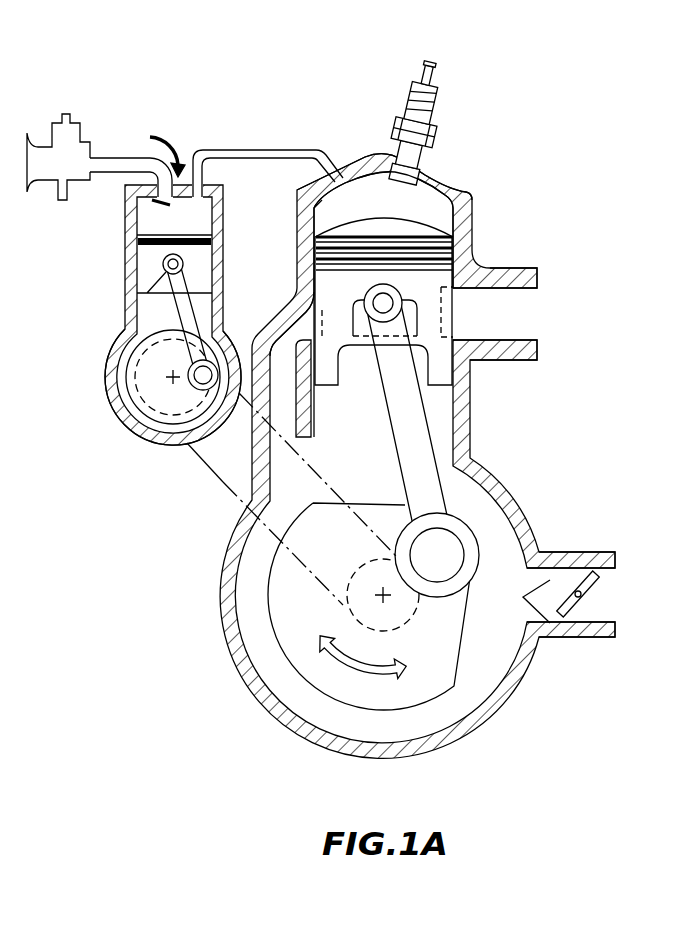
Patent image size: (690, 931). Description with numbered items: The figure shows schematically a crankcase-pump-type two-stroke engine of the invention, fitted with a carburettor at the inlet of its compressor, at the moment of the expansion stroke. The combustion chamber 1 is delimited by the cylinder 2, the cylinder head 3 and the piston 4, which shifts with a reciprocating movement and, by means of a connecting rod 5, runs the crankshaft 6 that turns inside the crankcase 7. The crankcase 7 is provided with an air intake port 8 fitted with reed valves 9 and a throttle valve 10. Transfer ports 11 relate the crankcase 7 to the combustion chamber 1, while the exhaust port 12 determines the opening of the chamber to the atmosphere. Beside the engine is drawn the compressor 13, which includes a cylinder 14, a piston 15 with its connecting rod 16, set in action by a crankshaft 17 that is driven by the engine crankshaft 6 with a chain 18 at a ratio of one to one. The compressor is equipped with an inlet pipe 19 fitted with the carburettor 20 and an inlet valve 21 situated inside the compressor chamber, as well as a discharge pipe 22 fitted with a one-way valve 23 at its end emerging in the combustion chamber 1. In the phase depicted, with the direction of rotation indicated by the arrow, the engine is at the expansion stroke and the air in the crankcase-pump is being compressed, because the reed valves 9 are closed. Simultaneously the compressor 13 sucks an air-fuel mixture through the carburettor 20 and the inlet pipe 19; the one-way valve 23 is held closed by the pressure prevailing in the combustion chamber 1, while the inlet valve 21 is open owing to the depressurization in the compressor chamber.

The combustion chamber 1 is at (372, 200).
The cylinder 2 is at (467, 233).
The cylinder head 3 is at (448, 182).
The piston 4 is at (423, 297).
The connecting rod 5 is at (413, 451).
The crankshaft 6 is at (418, 682).
The crankcase 7 is at (258, 698).
The air intake port 8 is at (627, 597).
The reed valves 9 is at (541, 598).
The throttle valve 10 is at (579, 578).
The transfer ports 11 is at (284, 328).
The exhaust port 12 is at (523, 315).
The compressor 13 is at (103, 378).
The cylinder 14 is at (125, 292).
The piston 15 is at (156, 263).
The connecting rod 16 is at (186, 322).
The crankshaft 17 is at (137, 418).
The chain 18 is at (223, 482).
The inlet pipe 19 is at (123, 157).
The carburettor 20 is at (62, 105).
The inlet valve 21 is at (155, 205).
The discharge pipe 22 is at (258, 150).
The one-way valve 23 is at (326, 206).